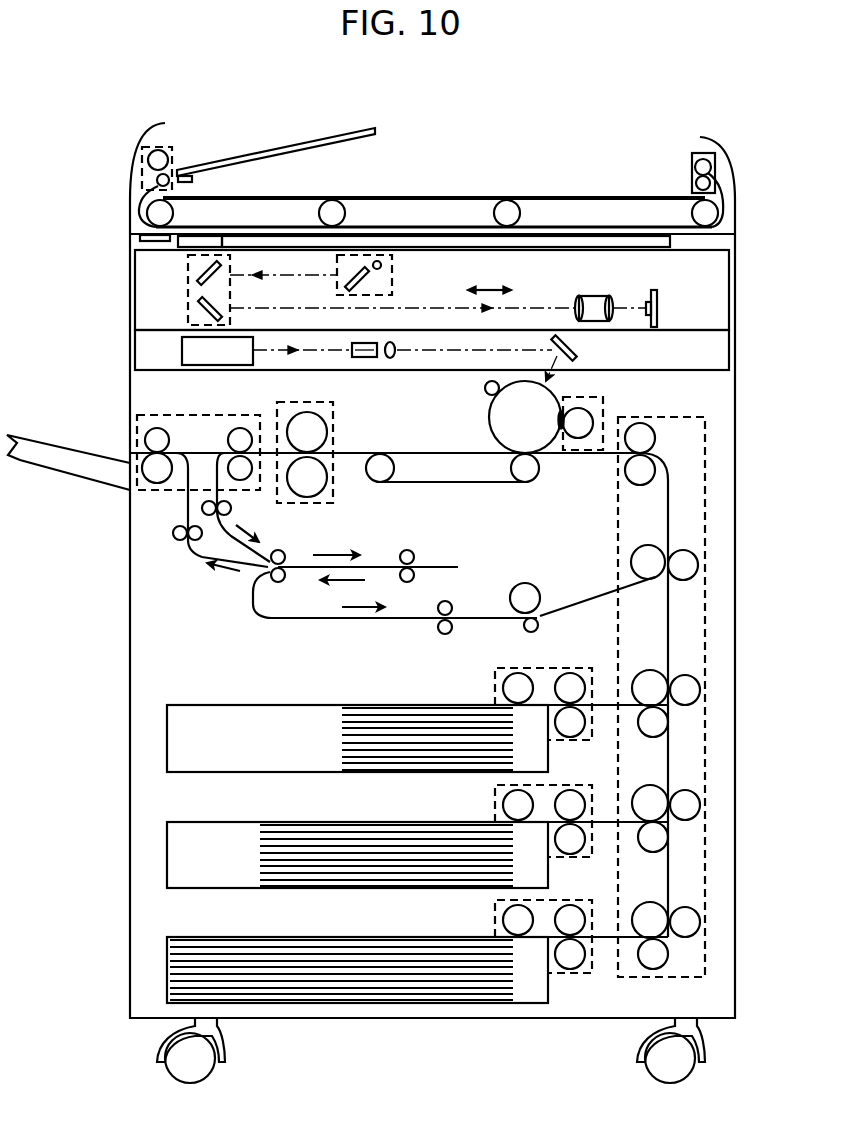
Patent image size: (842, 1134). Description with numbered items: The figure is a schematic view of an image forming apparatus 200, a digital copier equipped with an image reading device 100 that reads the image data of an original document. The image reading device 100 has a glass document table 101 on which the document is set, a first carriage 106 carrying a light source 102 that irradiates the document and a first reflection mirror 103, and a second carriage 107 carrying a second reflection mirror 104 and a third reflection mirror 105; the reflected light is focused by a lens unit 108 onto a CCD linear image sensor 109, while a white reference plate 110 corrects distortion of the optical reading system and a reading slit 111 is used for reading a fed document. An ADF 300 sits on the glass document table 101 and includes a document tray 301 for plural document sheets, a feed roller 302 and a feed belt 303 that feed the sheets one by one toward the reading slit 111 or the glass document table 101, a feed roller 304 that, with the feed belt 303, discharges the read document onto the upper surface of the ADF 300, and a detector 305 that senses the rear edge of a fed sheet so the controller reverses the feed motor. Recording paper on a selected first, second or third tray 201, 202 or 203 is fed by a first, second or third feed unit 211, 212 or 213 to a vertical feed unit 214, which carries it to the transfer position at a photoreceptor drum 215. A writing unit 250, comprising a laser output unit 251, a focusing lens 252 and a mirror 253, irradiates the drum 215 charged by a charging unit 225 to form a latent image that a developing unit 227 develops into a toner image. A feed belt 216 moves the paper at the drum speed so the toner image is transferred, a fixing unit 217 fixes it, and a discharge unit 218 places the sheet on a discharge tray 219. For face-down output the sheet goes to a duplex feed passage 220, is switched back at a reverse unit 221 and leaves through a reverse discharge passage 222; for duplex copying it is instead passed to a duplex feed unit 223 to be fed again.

The image reading device 100 is at (440, 290).
The glass document table 101 is at (670, 242).
The light source 102 is at (382, 266).
The first reflection mirror 103 is at (370, 290).
The second reflection mirror 104 is at (198, 273).
The third reflection mirror 105 is at (200, 312).
The first carriage 106 is at (362, 278).
The second carriage 107 is at (158, 290).
The lens unit 108 is at (595, 296).
The CCD linear image sensor 109 is at (653, 291).
The white reference plate 110 is at (203, 236).
The reading slit 111 is at (147, 238).
The image forming apparatus 200 is at (97, 192).
The first tray 201 is at (160, 733).
The second tray 202 is at (160, 851).
The third tray 203 is at (160, 966).
The first feed unit 211 is at (574, 664).
The second feed unit 212 is at (566, 782).
The third feed unit 213 is at (566, 898).
The vertical feed unit 214 is at (705, 715).
The photoreceptor drum 215 is at (489, 424).
The feed belt 216 is at (487, 485).
The fixing unit 217 is at (337, 440).
The discharge unit 218 is at (182, 413).
The discharge tray 219 is at (73, 447).
The duplex feed passage 220 is at (237, 499).
The reverse unit 221 is at (384, 552).
The reverse discharge passage 222 is at (181, 509).
The duplex feed unit 223 is at (347, 628).
The charging unit 225 is at (485, 392).
The developing unit 227 is at (605, 413).
The writing unit 250 is at (440, 366).
The laser output unit 251 is at (182, 350).
The focusing lens 252 is at (390, 358).
The mirror 253 is at (577, 348).
The ADF 300 is at (437, 175).
The document tray 301 is at (307, 140).
The feed roller 302 is at (170, 142).
The feed belt 303 is at (416, 197).
The feed roller 304 is at (698, 153).
The detector 305 is at (193, 179).